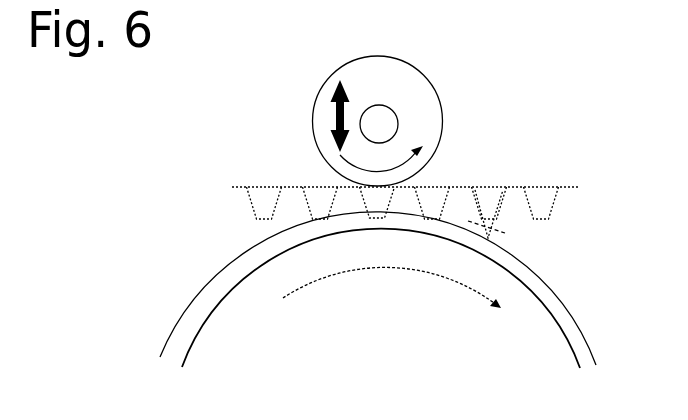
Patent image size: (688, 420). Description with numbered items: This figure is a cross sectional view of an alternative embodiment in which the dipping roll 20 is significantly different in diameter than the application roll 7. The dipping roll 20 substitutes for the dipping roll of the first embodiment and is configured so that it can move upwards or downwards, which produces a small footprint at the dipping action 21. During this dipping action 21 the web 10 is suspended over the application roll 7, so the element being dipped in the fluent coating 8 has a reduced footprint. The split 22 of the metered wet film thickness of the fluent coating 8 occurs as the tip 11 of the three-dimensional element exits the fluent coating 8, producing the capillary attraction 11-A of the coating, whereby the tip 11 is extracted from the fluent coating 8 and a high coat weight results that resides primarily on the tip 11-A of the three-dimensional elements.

The application roll 7 is at (577, 349).
The fluent coating 8 is at (217, 272).
The web 10 is at (468, 187).
The tip of the three-dimensional element 11 is at (258, 197).
The capillary attraction at the tip 11-A is at (547, 222).
The dipping roll 20 is at (444, 116).
The dipping action footprint 21 is at (378, 221).
The split of the metered wet film 22 is at (510, 237).